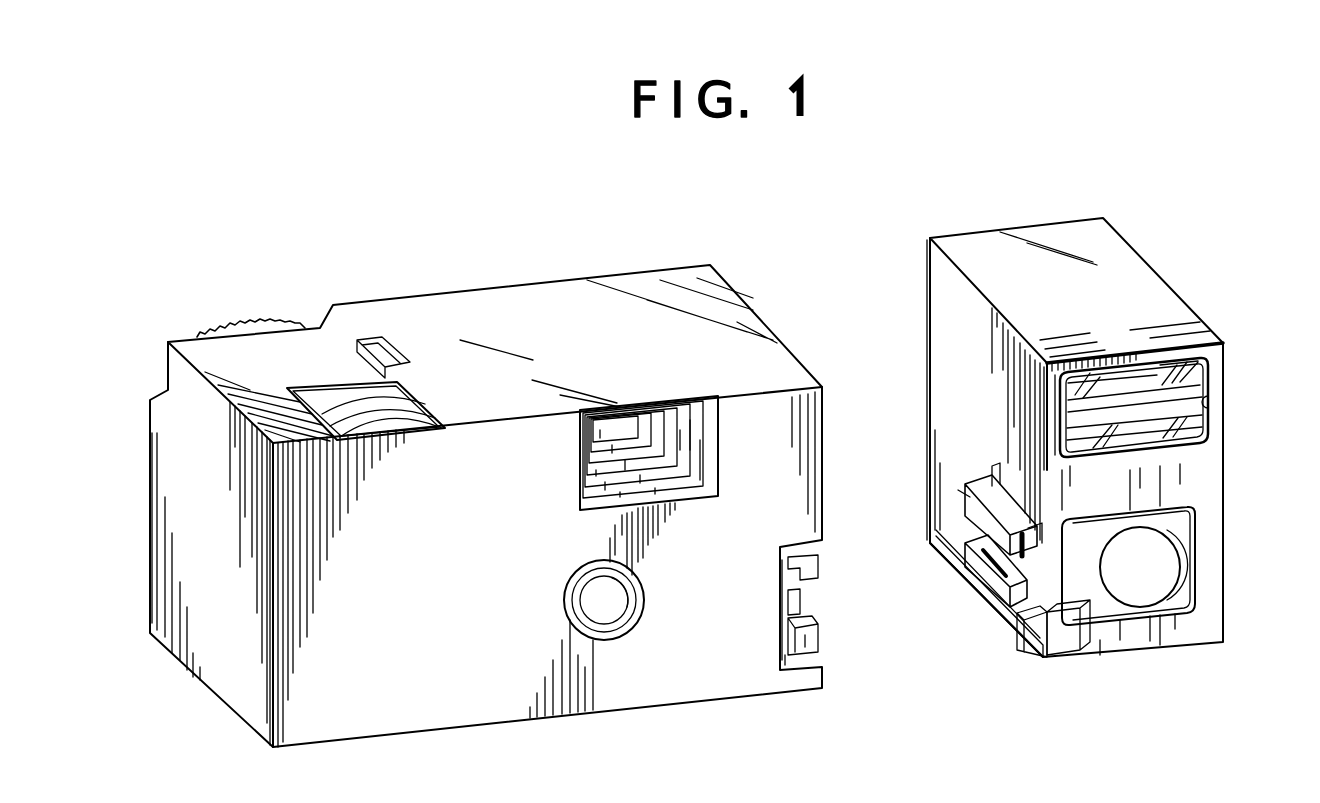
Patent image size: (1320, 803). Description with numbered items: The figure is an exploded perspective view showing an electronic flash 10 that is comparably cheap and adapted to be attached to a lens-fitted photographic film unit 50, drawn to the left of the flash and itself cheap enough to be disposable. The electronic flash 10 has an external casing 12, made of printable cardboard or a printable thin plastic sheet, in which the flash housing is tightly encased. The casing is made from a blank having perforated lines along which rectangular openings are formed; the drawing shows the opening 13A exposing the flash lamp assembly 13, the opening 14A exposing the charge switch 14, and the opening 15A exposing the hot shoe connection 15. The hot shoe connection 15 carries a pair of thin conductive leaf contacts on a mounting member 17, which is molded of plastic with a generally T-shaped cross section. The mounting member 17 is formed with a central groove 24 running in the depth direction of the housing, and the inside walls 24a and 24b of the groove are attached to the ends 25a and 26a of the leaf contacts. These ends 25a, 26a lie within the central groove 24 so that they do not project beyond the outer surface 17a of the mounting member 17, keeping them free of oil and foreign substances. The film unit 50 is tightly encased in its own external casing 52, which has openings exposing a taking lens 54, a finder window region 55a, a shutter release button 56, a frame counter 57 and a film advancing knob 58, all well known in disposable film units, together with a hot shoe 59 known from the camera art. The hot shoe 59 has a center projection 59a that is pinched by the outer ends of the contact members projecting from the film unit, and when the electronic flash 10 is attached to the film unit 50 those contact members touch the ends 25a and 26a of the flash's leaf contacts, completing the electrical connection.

The electronic flash 10 is at (1086, 204).
The external casing 12 is at (1208, 466).
The flash lamp assembly 13 is at (1185, 370).
The rectangular opening 13A is at (1207, 404).
The charge switch 14 is at (1155, 568).
The rectangular opening 14A is at (1130, 625).
The hot shoe connection 15 is at (981, 614).
The rectangular opening 15A is at (1000, 480).
The mounting member 17 is at (1027, 652).
The outer surface of the mounting member 17a is at (960, 490).
The central groove 24 is at (1030, 576).
The inside wall of the groove 24a is at (1047, 545).
The inside wall of the groove 24b is at (1057, 612).
The end of the leaf contact 25a is at (963, 551).
The end of the leaf contact 26a is at (990, 567).
The lens-fitted photographic film unit 50 is at (558, 268).
The external casing 52 is at (295, 588).
The taking lens 54 is at (600, 617).
The stepped recess 55a is at (657, 429).
The shutter release button 56 is at (403, 411).
The frame counter 57 is at (393, 356).
The film advancing knob 58 is at (257, 320).
The hot shoe 59 is at (812, 563).
The center projection 59a is at (802, 606).